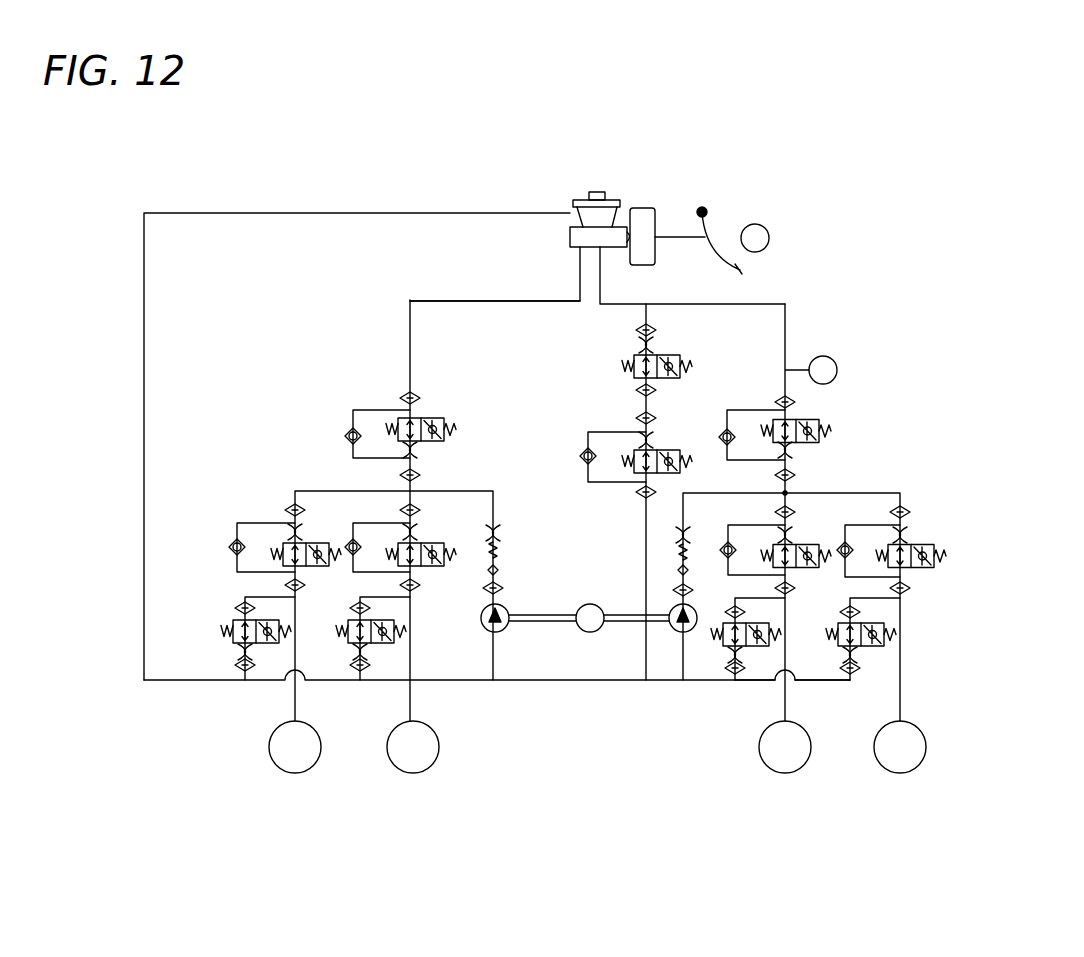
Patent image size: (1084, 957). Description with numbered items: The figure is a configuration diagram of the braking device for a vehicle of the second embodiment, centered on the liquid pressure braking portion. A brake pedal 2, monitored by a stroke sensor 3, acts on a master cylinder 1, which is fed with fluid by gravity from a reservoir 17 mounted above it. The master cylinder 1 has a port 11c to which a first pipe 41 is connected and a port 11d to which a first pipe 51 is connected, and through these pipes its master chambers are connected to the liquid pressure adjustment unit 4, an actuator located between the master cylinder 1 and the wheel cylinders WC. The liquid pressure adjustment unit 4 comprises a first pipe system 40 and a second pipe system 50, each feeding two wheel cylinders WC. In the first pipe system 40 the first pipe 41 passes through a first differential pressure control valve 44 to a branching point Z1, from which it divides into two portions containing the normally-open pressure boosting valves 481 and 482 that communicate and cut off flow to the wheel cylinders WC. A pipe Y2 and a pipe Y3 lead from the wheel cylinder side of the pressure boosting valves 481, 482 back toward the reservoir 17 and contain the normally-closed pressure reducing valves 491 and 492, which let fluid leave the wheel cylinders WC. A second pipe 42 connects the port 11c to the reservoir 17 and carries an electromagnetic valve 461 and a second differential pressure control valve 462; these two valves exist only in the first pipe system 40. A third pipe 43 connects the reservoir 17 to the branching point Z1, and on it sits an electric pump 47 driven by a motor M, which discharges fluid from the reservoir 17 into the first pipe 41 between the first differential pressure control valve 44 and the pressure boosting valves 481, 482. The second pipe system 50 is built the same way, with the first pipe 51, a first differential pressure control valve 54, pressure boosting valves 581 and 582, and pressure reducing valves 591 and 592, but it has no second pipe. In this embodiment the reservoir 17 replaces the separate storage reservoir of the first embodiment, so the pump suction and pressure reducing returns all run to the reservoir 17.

The master cylinder 1 is at (572, 237).
The brake pedal 2 is at (722, 262).
The stroke sensor 3 is at (768, 229).
The liquid pressure adjustment unit 4 is at (263, 287).
The port 11c is at (604, 260).
The port 11d is at (580, 255).
The reservoir 17 is at (590, 206).
The first pipe system 40 is at (845, 298).
The first pipe 41 is at (740, 303).
The second pipe 42 is at (646, 505).
The third pipe 43 is at (672, 655).
The first differential pressure control valve 44 is at (835, 432).
The electric pump 47 is at (670, 603).
The second pipe system 50 is at (348, 307).
The first pipe 51 is at (495, 300).
The first differential pressure control valve 54 is at (398, 425).
The electromagnetic valve 461 is at (633, 378).
The second differential pressure control valve 462 is at (635, 470).
The pressure boosting valve 481 is at (773, 548).
The pressure boosting valve 482 is at (888, 548).
The pressure reducing valve 491 is at (723, 647).
The pressure reducing valve 492 is at (862, 648).
The pressure boosting valve 581 is at (288, 540).
The pressure boosting valve 582 is at (398, 549).
The pressure reducing valve 591 is at (233, 625).
The pressure reducing valve 592 is at (395, 639).
The motor M is at (592, 632).
The branching point Z1 is at (790, 492).
The pipe Y2 is at (720, 688).
The pipe Y3 is at (820, 688).
The wheel cylinders WC is at (283, 752).